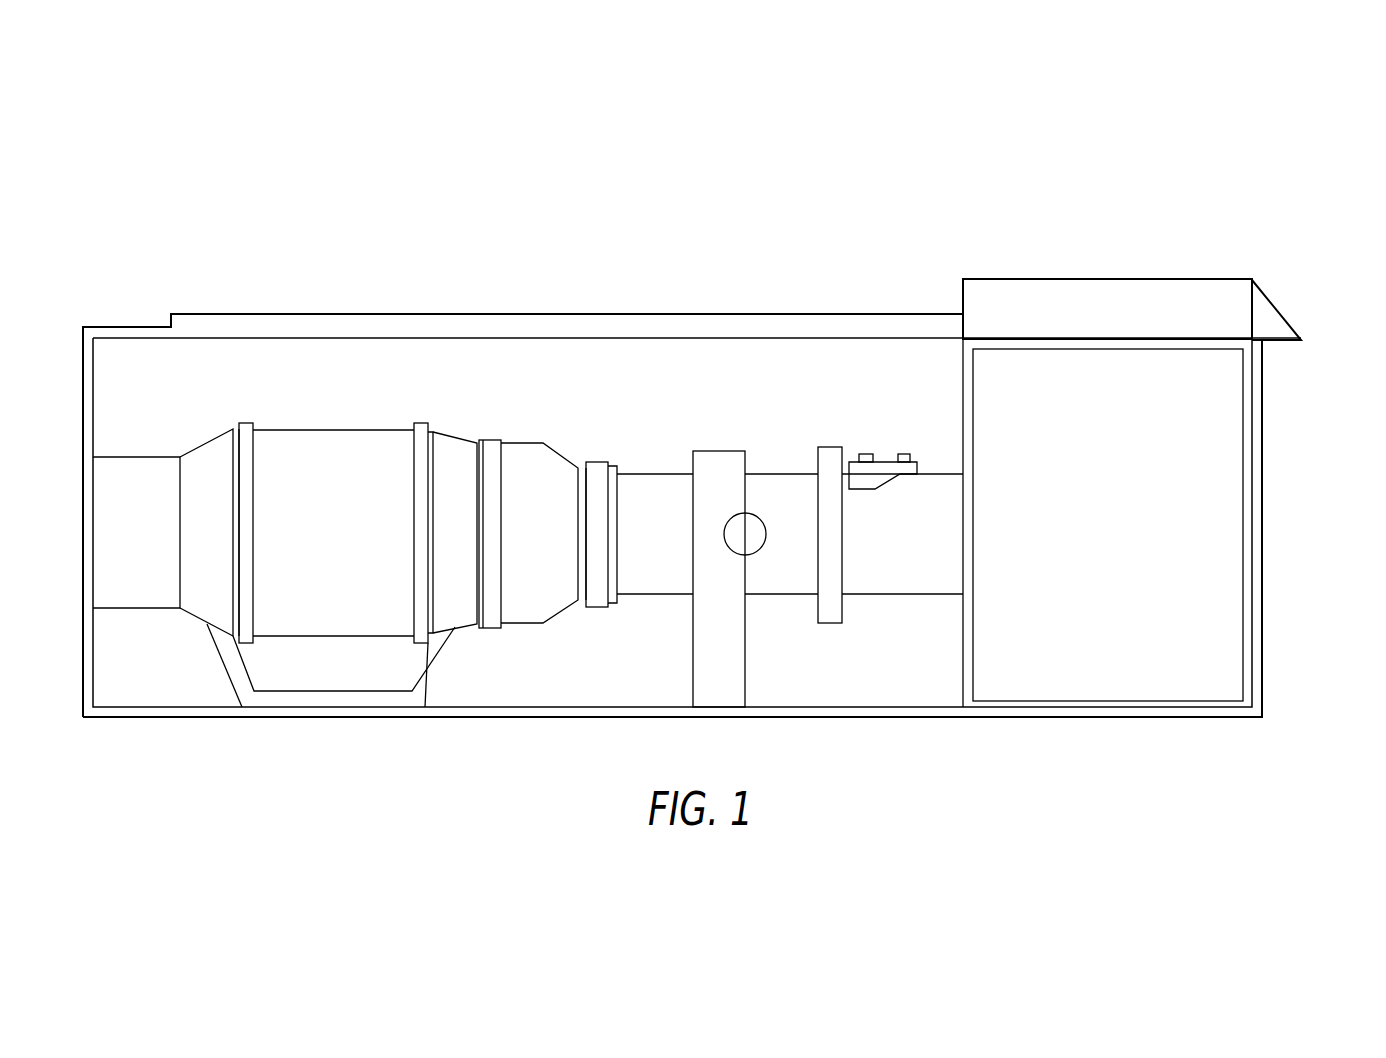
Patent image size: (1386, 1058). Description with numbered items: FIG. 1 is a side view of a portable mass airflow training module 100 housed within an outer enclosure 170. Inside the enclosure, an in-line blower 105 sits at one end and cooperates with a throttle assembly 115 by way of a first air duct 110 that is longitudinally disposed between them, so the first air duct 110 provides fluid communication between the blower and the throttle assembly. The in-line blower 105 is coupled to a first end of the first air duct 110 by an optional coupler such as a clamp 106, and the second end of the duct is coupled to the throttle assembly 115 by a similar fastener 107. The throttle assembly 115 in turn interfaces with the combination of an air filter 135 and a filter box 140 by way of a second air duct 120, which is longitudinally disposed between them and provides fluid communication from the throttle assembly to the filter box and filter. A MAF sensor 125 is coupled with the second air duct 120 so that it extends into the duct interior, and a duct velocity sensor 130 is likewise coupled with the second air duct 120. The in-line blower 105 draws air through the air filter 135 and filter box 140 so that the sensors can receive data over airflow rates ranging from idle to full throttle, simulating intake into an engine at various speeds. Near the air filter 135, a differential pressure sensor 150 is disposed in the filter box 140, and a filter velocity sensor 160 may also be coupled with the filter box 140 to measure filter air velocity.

The portable MAF training module 100 is at (790, 218).
The in-line blower 105 is at (296, 610).
The clamp 106 is at (492, 613).
The fastener 107 is at (598, 595).
The first air duct 110 is at (523, 468).
The throttle assembly 115 is at (722, 483).
The second air duct 120 is at (893, 582).
The MAF sensor 125 is at (870, 470).
The duct velocity sensor 130 is at (792, 473).
The air filter 135 is at (1145, 278).
The filter box 140 is at (1062, 705).
The differential pressure sensor 150 is at (1258, 307).
The filter velocity sensor 160 is at (1292, 363).
The outer enclosure 170 is at (212, 393).